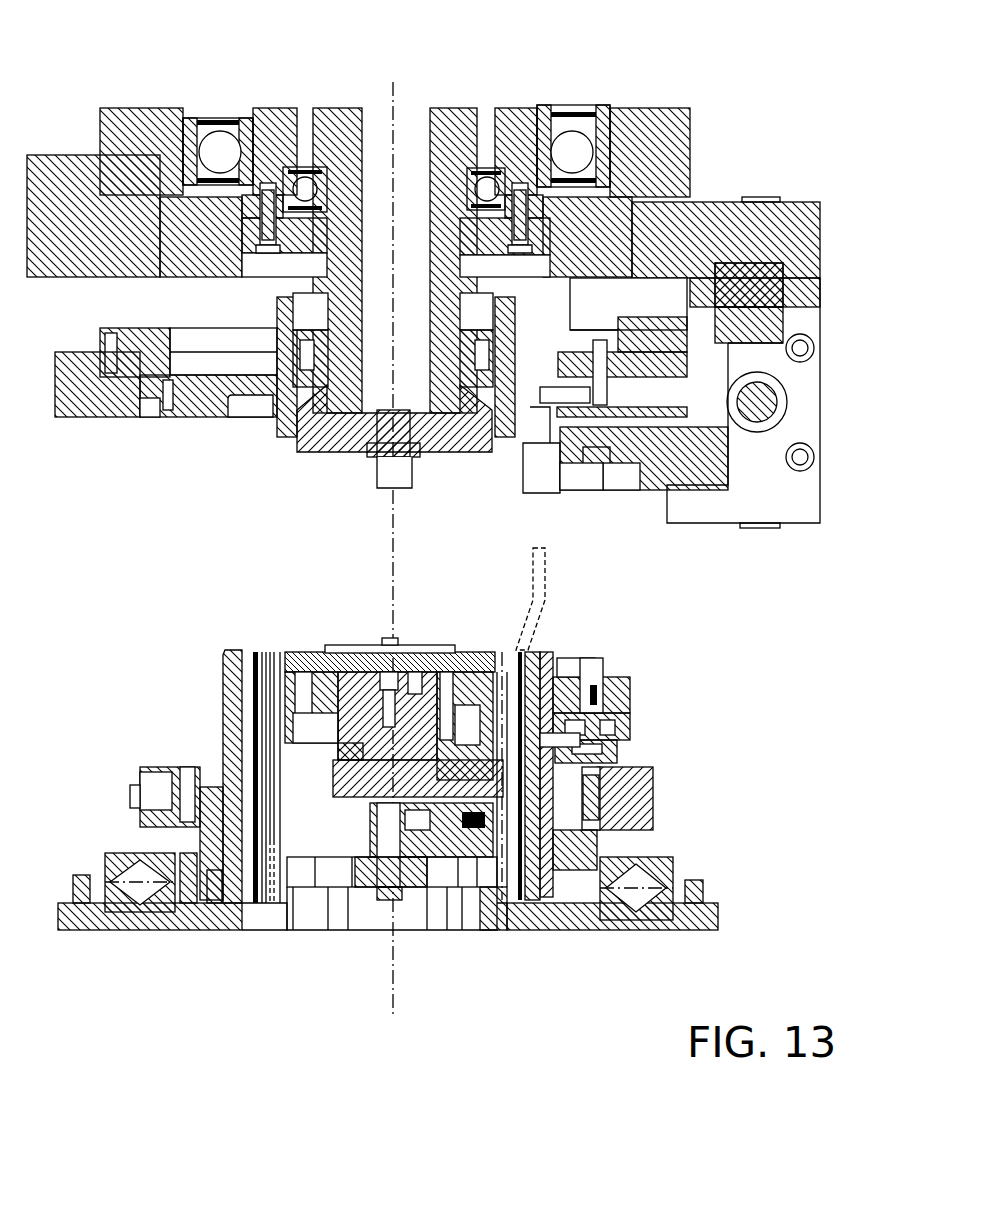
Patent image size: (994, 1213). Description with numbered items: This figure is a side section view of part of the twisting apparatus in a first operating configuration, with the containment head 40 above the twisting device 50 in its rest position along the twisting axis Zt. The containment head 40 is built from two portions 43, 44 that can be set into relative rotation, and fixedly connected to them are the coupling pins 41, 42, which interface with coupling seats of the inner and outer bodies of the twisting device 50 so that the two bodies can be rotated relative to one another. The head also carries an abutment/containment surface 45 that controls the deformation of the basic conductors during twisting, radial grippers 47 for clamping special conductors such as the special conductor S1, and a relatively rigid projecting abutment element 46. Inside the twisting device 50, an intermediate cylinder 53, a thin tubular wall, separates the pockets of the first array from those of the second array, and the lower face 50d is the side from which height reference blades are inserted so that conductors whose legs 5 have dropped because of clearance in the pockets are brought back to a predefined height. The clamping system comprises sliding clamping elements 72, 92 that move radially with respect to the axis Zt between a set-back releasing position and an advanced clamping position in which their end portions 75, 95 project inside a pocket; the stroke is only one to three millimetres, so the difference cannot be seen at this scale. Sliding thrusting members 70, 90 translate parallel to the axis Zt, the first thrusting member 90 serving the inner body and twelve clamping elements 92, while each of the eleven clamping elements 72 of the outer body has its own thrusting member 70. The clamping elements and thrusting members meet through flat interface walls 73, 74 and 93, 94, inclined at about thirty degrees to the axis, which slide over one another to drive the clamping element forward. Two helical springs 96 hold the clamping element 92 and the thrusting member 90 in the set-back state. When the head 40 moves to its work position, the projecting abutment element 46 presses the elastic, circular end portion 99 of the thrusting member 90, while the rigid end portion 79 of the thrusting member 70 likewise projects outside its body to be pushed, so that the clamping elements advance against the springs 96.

The containment head 40 is at (85, 435).
The coupling pin 41 is at (400, 468).
The coupling pin 42 is at (545, 490).
The portion of the containment head 43 is at (322, 110).
The portion of the containment head 44 is at (522, 113).
The abutment/containment surface 45 is at (260, 407).
The projecting abutment element 46 is at (368, 453).
The radial grippers 47 is at (520, 447).
The twisting device 50 is at (218, 642).
The lower face of the twisting device 50d is at (252, 930).
The intermediate cylinder 53 is at (257, 650).
The sliding thrusting member 70 is at (632, 693).
The sliding clamping element 72 is at (570, 677).
The first interface wall 73 is at (695, 743).
The second interface wall 74 is at (633, 723).
The end portion 75 is at (633, 740).
The end portion 79 is at (600, 677).
The sliding thrusting member 90 is at (342, 775).
The sliding clamping element 92 is at (448, 670).
The first interface wall 93 is at (663, 809).
The second interface wall 94 is at (591, 798).
The end portion 95 is at (545, 792).
The elastic element 96 is at (410, 900).
The end portion 99 is at (368, 670).
The legs 5 is at (550, 845).
The special conductor S1 is at (533, 562).
The twisting axis Zt is at (392, 546).